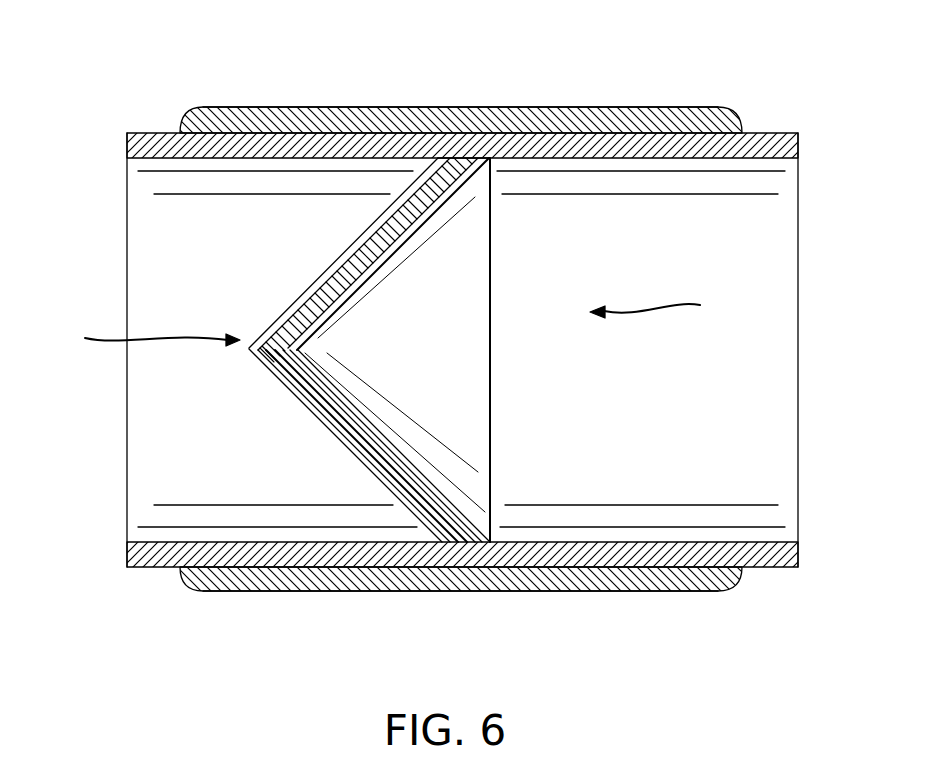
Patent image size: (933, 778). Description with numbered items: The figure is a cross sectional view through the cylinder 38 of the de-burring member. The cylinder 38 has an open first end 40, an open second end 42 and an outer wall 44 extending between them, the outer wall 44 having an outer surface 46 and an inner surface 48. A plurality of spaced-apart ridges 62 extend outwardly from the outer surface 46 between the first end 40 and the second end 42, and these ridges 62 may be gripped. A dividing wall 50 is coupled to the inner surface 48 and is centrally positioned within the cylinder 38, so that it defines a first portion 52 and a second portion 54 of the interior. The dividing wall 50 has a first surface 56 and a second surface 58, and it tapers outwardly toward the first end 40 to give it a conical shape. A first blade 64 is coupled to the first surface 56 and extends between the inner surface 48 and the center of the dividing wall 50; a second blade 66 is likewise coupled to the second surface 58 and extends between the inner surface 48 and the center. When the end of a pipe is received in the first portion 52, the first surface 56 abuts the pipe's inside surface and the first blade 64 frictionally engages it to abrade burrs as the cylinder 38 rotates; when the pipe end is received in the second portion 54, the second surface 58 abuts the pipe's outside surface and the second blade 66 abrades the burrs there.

The cylinder 38 is at (127, 133).
The first end 40 is at (127, 146).
The second end 42 is at (798, 148).
The outer wall 44 is at (764, 570).
The outer surface 46 is at (672, 107).
The inner surface 48 is at (503, 163).
The dividing wall 50 is at (327, 280).
The first portion 52 is at (139, 333).
The second portion 54 is at (667, 305).
The first surface 56 is at (300, 300).
The second surface 58 is at (440, 495).
The ridges 62 is at (445, 107).
The first blade 64 is at (326, 437).
The second blade 66 is at (372, 432).